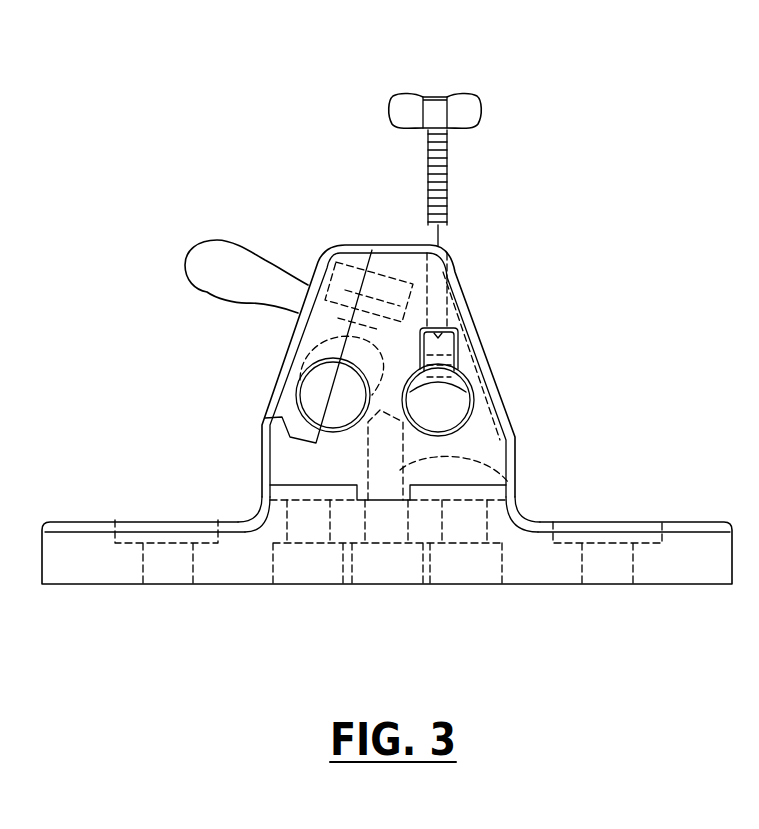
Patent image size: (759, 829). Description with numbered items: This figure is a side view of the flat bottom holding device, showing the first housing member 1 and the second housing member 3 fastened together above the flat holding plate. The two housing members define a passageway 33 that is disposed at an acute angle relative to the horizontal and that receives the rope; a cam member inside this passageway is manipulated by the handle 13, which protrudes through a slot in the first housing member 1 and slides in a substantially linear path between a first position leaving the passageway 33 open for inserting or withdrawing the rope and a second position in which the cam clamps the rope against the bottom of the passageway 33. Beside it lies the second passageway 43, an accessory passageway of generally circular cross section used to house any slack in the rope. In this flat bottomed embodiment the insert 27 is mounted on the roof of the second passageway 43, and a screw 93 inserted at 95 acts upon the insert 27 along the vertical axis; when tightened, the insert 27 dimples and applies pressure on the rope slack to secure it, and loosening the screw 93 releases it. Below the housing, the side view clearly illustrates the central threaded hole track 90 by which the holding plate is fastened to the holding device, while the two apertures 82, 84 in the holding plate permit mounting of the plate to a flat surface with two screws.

The first housing member 1 is at (283, 353).
The second housing member 3 is at (472, 312).
The handle 13 is at (210, 246).
The insert 27 is at (466, 378).
The passageway 33 is at (313, 393).
The second passageway 43 is at (477, 413).
The aperture 82 is at (168, 512).
The aperture 84 is at (615, 520).
The threaded hole track 90 is at (485, 462).
The screw 93 is at (478, 93).
The screw insertion location 95 is at (476, 257).